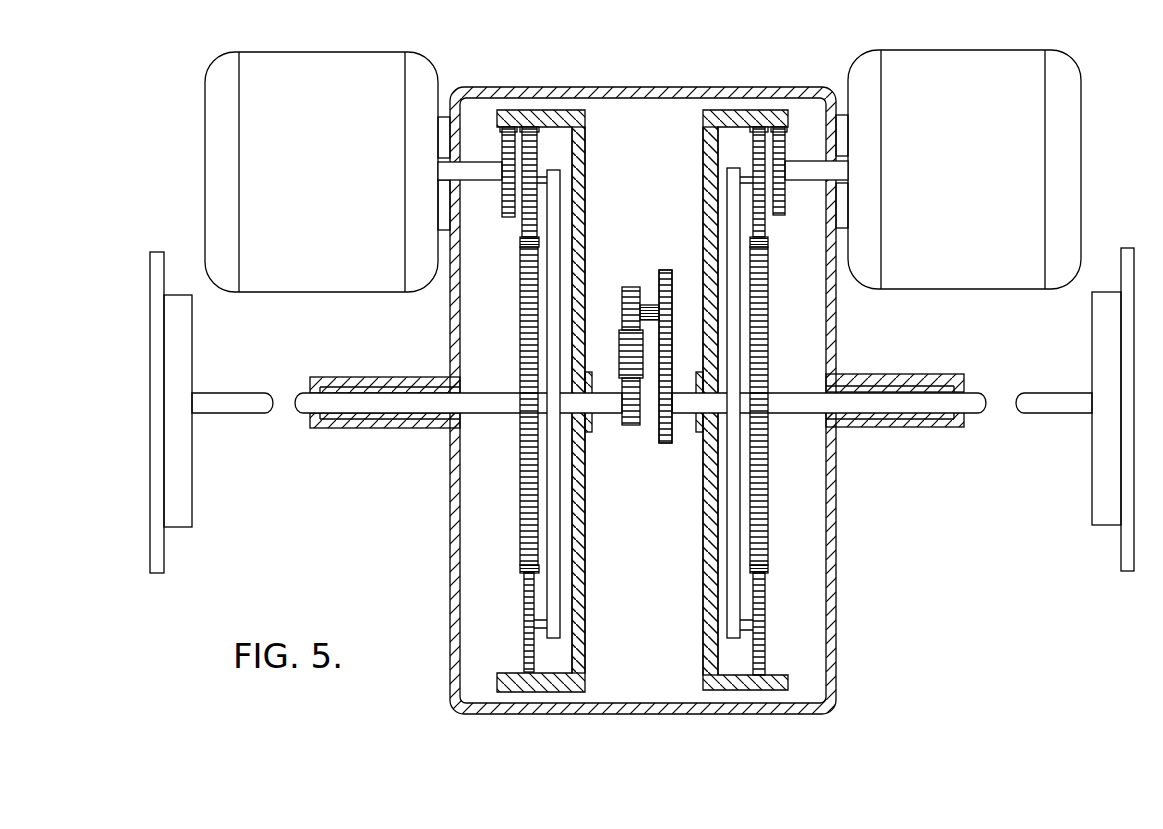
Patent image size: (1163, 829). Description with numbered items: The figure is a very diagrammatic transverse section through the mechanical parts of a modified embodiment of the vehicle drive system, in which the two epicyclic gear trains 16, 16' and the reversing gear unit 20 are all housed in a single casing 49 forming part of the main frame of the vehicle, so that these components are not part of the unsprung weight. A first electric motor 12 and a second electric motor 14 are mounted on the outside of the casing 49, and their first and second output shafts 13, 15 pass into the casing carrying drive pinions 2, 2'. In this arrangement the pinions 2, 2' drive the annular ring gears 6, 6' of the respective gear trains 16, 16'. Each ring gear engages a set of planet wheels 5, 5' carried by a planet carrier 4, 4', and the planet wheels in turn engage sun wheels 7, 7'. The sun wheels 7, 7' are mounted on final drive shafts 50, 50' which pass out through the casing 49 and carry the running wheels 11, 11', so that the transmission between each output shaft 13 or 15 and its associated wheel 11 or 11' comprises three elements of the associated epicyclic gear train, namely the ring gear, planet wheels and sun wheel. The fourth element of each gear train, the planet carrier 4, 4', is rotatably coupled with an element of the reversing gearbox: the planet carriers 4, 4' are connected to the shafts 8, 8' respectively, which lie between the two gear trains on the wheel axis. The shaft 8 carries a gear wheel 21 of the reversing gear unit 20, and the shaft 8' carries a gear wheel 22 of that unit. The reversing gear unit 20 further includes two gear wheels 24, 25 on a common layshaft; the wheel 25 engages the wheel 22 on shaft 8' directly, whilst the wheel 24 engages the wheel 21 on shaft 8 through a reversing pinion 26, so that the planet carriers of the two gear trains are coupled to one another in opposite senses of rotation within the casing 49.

The drive pinion 2 is at (488, 166).
The drive pinion 2' is at (796, 167).
The planet carrier 4 is at (577, 404).
The planet carrier 4' is at (706, 403).
The planet wheels 5 is at (553, 387).
The planet wheels 5' is at (727, 401).
The annular ring gear 6 is at (596, 400).
The annular ring gear 6' is at (688, 401).
The sun wheel 7 is at (512, 405).
The sun wheel 7' is at (778, 405).
The shaft 8 is at (458, 425).
The shaft 8' is at (823, 435).
The running wheel 11 is at (211, 412).
The running wheel 11' is at (1075, 409).
The first electric motor 12 is at (292, 147).
The first output shaft 13 is at (485, 170).
The second electric motor 14 is at (949, 144).
The second output shaft 15 is at (818, 172).
The epicyclic gear train 16 is at (544, 370).
The epicyclic gear train 16' is at (742, 370).
The reversing gear unit 20 is at (637, 270).
The gear wheel 21 is at (632, 426).
The gear wheel 22 is at (664, 446).
The gear wheel 24 is at (625, 288).
The gear wheel 25 is at (672, 290).
The reversing pinion 26 is at (619, 348).
The casing 49 is at (836, 463).
The final drive shaft 50 is at (385, 417).
The final drive shaft 50' is at (895, 427).